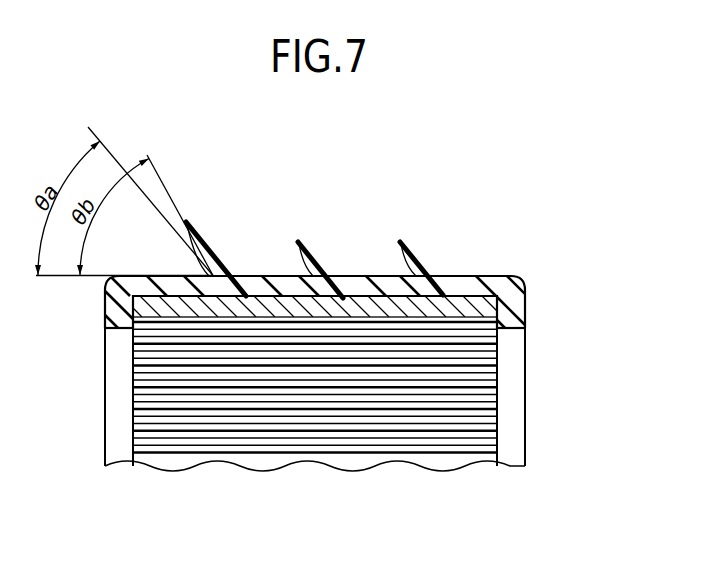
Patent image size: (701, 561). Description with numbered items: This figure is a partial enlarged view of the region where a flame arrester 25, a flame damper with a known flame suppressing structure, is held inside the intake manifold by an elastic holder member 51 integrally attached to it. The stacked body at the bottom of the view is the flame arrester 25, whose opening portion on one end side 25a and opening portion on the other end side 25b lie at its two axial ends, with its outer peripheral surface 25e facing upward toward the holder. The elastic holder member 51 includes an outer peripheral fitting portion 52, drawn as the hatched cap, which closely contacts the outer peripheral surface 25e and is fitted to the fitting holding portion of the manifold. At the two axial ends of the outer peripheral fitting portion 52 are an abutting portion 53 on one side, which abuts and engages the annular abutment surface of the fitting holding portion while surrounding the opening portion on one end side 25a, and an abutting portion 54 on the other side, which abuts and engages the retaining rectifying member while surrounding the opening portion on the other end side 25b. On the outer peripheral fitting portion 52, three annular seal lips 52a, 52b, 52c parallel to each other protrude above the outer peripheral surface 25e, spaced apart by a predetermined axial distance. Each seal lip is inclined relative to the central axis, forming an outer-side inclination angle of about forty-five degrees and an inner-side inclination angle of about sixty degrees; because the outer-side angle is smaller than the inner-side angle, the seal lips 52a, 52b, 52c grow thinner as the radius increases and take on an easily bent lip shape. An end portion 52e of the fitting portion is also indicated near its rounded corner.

The flame arrester 25 is at (297, 454).
The opening portion on one end side of the flame arrester 25a is at (497, 375).
The opening portion on the other end side of the flame arrester 25b is at (133, 367).
The outer peripheral surface of the flame arrester 25e is at (473, 298).
The elastic holder member 51 is at (482, 223).
The outer peripheral fitting portion 52 is at (160, 279).
The seal lip 52a is at (427, 255).
The seal lip 52b is at (325, 255).
The seal lip 52c is at (219, 257).
The end portion of top plate 52e is at (493, 275).
The abutting portion on one side 53 is at (520, 320).
The abutting portion on the other side 54 is at (113, 300).